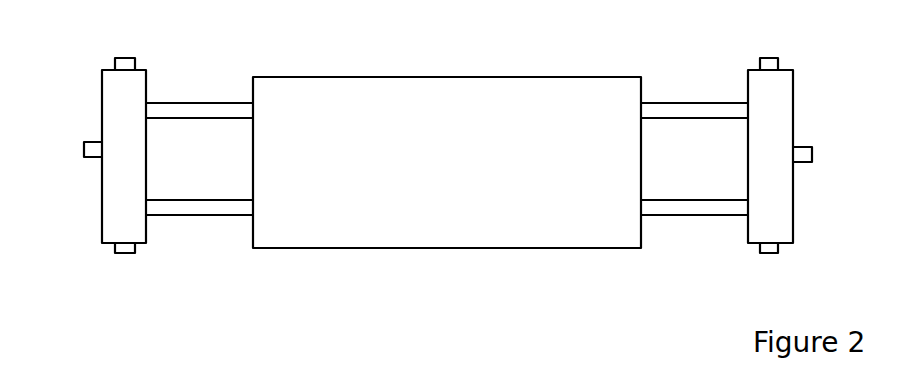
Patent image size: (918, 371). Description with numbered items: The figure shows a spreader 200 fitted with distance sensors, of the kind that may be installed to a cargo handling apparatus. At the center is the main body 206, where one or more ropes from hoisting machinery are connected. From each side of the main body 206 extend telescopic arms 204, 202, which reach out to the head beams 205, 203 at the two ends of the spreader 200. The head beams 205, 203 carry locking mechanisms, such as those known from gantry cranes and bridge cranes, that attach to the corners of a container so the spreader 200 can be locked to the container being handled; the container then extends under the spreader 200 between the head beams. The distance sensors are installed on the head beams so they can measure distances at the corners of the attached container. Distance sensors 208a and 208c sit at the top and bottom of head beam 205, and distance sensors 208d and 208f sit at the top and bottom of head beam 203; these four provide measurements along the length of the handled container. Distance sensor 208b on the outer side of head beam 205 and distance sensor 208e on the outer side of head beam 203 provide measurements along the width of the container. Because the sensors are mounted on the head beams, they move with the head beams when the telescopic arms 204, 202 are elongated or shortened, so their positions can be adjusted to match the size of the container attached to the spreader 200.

The spreader 200 is at (716, 305).
The telescopic arm 202 is at (717, 119).
The head beam 203 is at (748, 83).
The telescopic arm 204 is at (221, 119).
The head beam 205 is at (147, 87).
The main body 206 is at (412, 77).
The distance sensor 208a is at (135, 58).
The distance sensor 208b is at (84, 142).
The distance sensor 208c is at (125, 254).
The distance sensor 208d is at (782, 69).
The distance sensor 208e is at (808, 162).
The distance sensor 208f is at (769, 254).